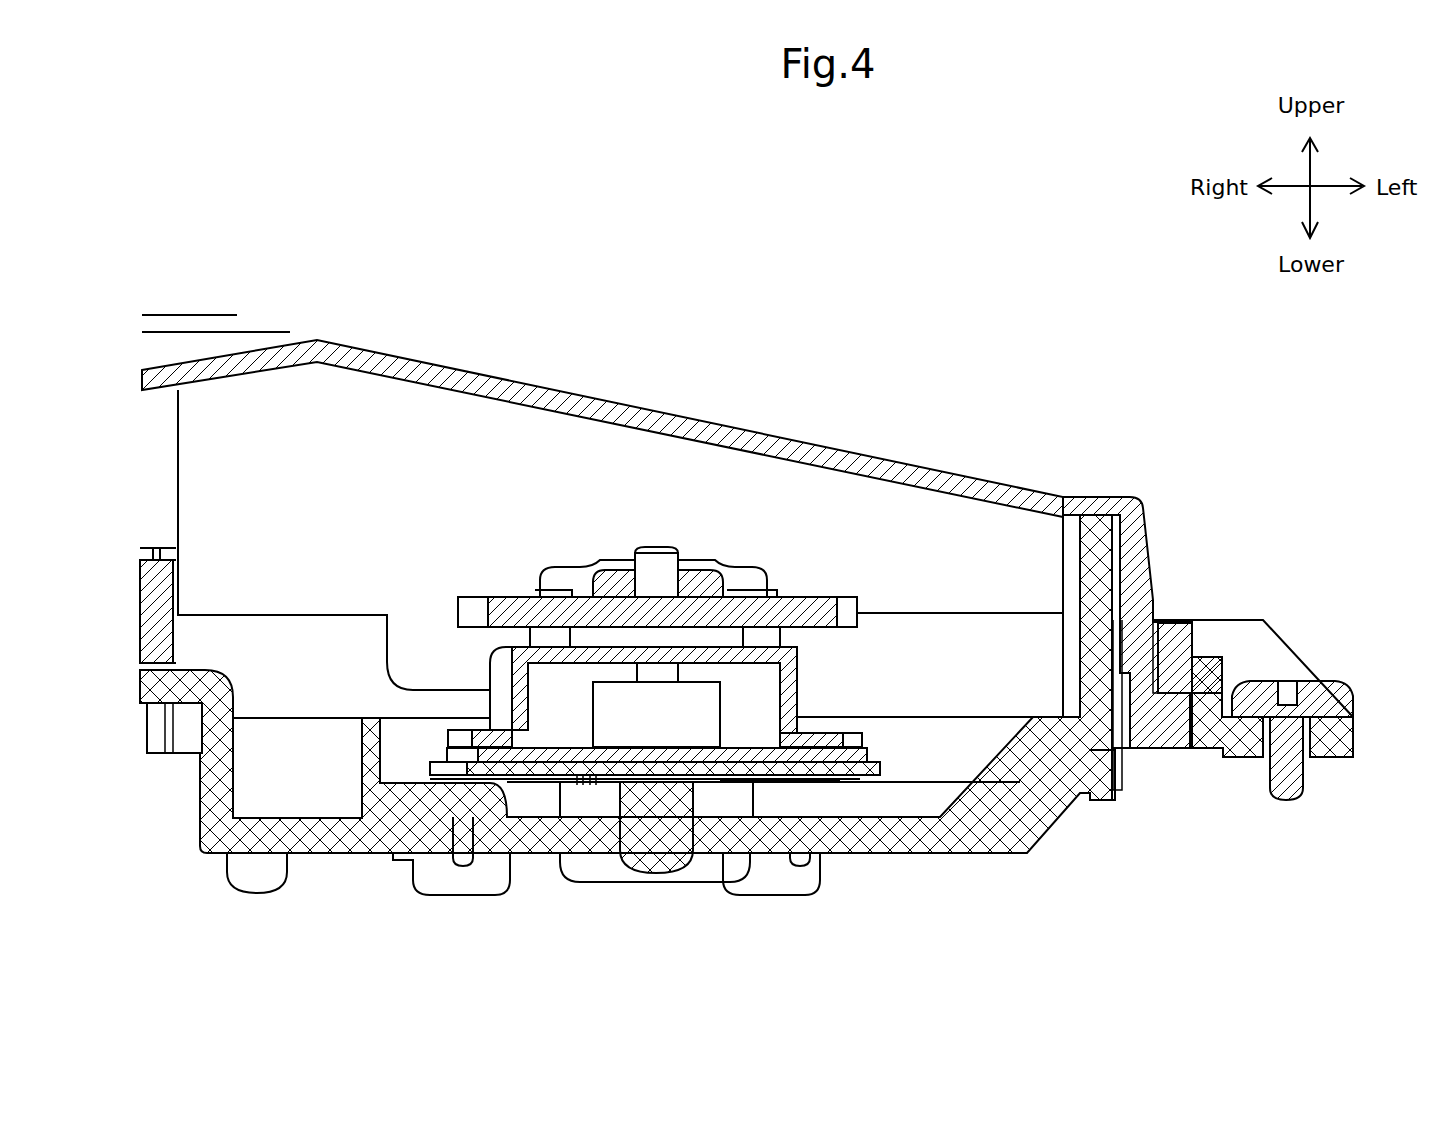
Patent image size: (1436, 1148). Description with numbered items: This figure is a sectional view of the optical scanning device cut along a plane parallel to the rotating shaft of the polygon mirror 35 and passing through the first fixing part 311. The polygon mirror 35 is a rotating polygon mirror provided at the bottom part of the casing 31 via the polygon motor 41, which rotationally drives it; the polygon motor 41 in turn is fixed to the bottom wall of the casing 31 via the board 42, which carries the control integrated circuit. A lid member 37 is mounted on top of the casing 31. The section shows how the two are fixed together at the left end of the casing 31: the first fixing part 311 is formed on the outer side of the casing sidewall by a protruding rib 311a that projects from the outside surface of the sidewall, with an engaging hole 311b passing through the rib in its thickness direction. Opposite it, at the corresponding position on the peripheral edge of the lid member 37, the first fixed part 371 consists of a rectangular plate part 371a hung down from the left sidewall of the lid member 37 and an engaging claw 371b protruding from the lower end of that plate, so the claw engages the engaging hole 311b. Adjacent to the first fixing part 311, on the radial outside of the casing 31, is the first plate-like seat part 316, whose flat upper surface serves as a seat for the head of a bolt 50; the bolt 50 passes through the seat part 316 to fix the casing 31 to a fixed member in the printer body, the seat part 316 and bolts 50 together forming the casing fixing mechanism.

The casing 31 is at (222, 853).
The first fixing part 311 is at (1170, 760).
The protruding rib 311a is at (1198, 682).
The engaging hole 311b is at (1125, 673).
The first plate-like seat part 316 is at (1327, 758).
The polygon mirror 35 is at (506, 602).
The lid member 37 is at (596, 398).
The first fixed part 371 is at (1162, 568).
The rectangular plate part 371a is at (1147, 627).
The engaging claw 371b is at (1165, 712).
The polygon motor 41 is at (797, 700).
The board 42 is at (872, 760).
The bolt 50 is at (1299, 690).